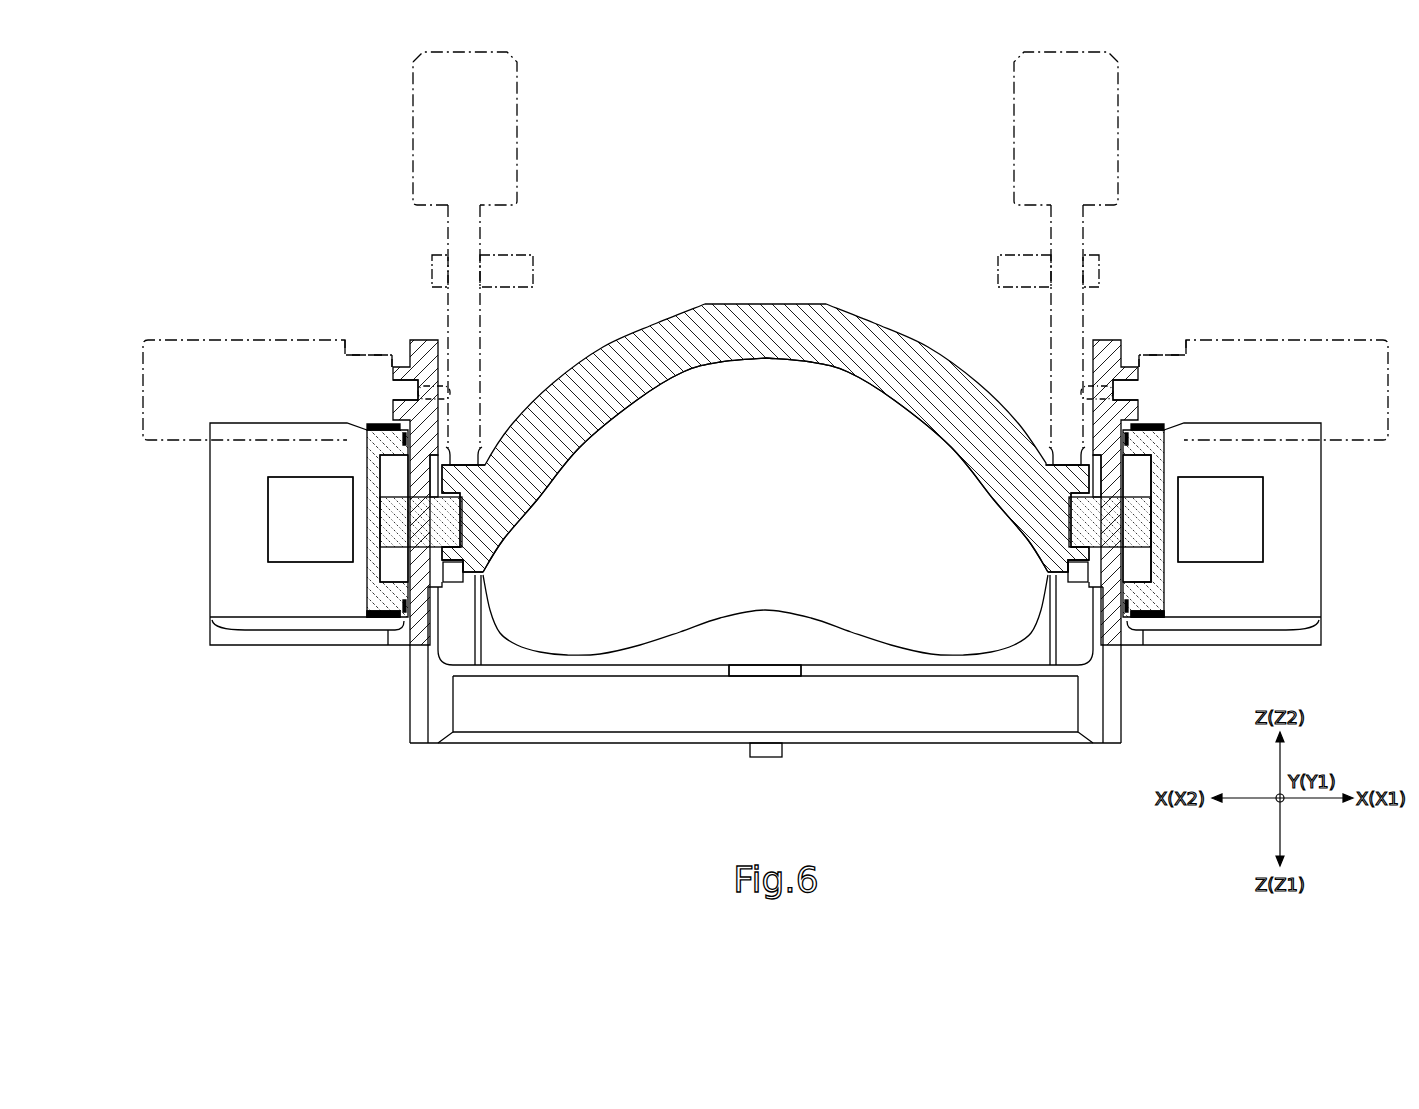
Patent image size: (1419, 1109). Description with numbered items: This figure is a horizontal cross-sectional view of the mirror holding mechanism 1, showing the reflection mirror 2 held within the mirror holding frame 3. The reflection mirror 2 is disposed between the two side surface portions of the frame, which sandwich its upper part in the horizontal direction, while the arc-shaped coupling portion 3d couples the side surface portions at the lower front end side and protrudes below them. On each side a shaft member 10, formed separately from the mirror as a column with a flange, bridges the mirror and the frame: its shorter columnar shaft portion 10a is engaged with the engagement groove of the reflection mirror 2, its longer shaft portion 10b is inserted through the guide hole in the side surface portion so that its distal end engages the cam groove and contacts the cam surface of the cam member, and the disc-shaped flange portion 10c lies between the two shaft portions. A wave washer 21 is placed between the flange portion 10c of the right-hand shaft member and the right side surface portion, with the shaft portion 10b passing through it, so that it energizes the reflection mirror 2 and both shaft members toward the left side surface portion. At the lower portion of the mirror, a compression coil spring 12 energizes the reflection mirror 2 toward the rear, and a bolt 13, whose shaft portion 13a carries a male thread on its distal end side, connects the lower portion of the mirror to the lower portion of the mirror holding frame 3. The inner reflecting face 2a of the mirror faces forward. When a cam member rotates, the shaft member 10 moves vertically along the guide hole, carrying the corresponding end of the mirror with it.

The mirror holding mechanism 1 is at (691, 156).
The reflection mirror 2 is at (765, 302).
The inner surface of lens 2a is at (766, 360).
The mirror holding frame 3 is at (766, 544).
The coupling portion 3d is at (615, 745).
The shaft member 10 is at (764, 523).
The shaft portion 10a is at (500, 520).
The shaft portion 10b is at (393, 560).
The flange portion 10c is at (458, 572).
The compression coil spring 12 is at (805, 668).
The bolt 13 is at (777, 778).
The shaft portion 13a is at (765, 758).
The wave washer 21 is at (1140, 472).